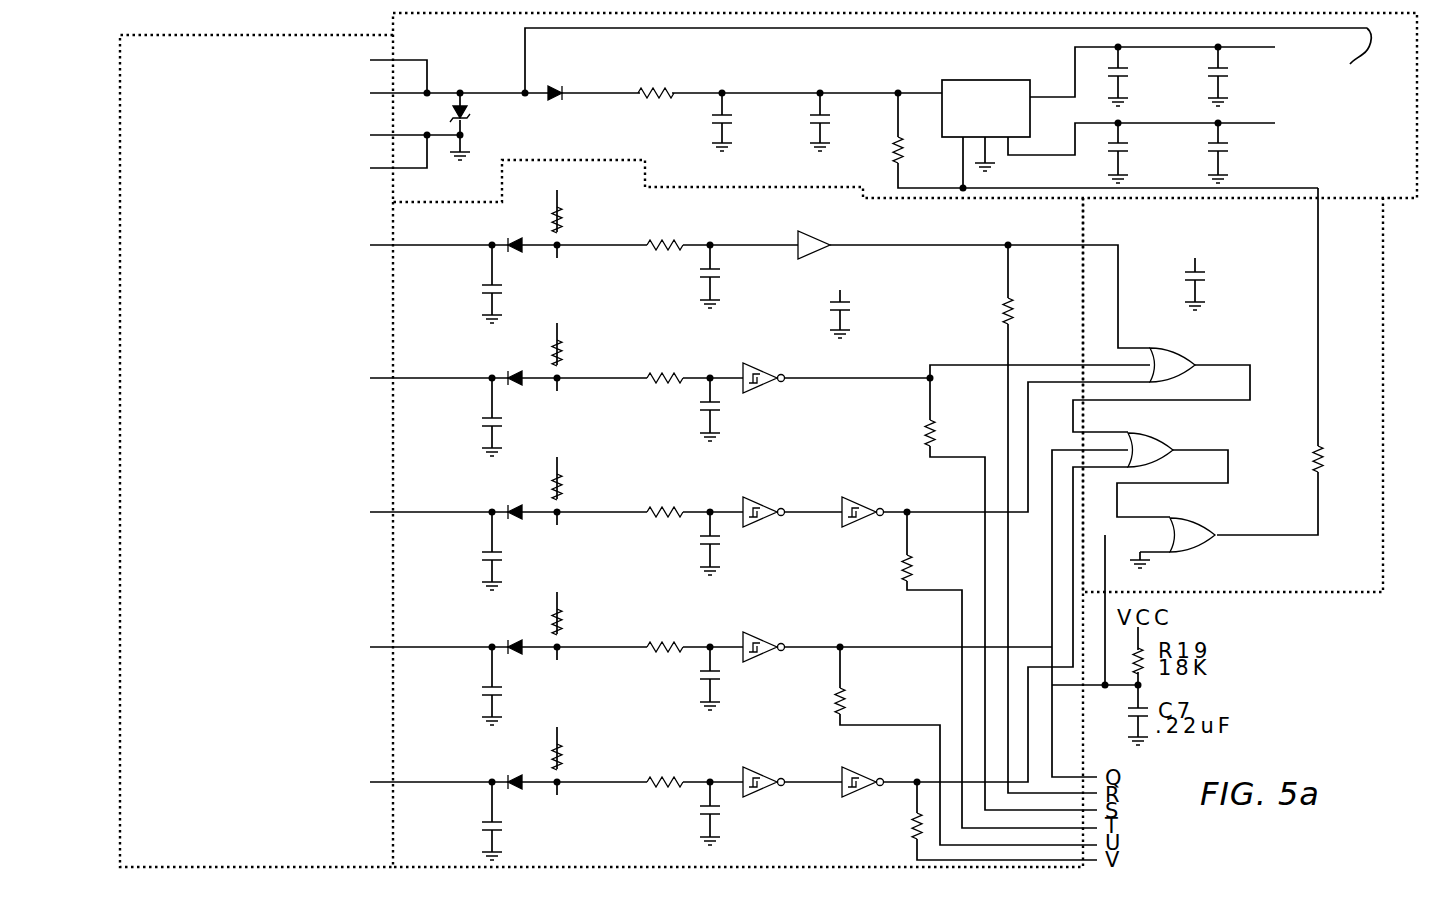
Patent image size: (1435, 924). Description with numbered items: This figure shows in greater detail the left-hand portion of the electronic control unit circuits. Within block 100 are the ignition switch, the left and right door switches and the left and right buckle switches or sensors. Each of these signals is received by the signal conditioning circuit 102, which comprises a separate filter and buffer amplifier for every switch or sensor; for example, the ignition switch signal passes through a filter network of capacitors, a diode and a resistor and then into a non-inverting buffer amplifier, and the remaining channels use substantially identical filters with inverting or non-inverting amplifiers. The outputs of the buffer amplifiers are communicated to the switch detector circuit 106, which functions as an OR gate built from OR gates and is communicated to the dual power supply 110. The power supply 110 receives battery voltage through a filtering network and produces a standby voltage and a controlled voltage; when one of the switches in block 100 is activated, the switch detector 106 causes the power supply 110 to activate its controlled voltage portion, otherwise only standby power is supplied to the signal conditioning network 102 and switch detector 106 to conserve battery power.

The block of sensors and switches 100 is at (314, 851).
The signal conditioning network 102 is at (607, 855).
The switch detector network 106 is at (1331, 584).
The dual power supply 110 is at (410, 31).